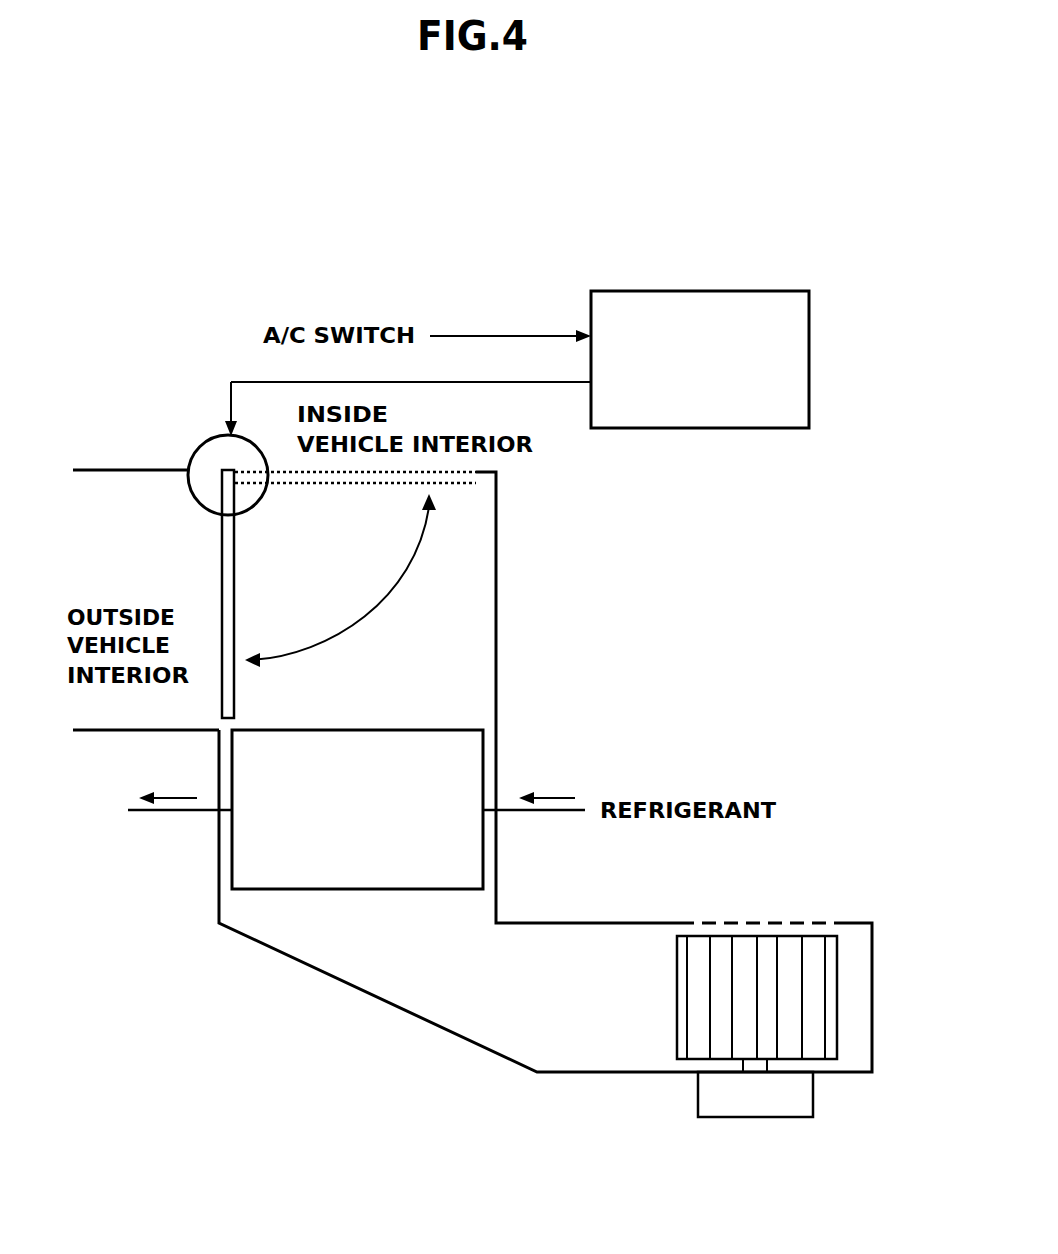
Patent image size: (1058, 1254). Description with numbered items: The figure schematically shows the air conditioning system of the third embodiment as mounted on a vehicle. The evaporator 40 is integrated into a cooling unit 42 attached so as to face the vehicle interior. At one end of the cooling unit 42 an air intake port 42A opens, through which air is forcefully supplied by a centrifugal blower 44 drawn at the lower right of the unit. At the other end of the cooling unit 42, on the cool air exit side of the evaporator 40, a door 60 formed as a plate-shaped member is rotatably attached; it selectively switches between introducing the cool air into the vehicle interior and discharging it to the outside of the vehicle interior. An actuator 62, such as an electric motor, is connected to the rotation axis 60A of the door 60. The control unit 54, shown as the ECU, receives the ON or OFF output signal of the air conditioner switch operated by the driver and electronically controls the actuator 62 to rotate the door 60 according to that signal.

The evaporator 40 is at (370, 730).
The cooling unit 42 is at (516, 588).
The air intake port 42A is at (750, 922).
The centrifugal blower 44 is at (677, 1000).
The control unit 54 is at (720, 291).
The door 60 is at (206, 571).
The rotation axis 60A is at (227, 474).
The actuator 62 is at (255, 497).